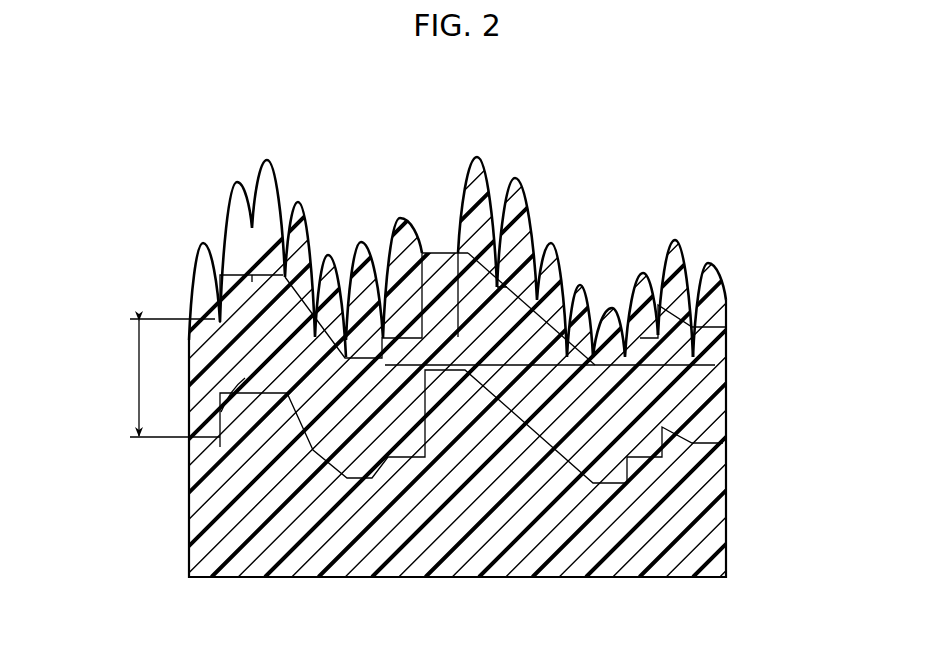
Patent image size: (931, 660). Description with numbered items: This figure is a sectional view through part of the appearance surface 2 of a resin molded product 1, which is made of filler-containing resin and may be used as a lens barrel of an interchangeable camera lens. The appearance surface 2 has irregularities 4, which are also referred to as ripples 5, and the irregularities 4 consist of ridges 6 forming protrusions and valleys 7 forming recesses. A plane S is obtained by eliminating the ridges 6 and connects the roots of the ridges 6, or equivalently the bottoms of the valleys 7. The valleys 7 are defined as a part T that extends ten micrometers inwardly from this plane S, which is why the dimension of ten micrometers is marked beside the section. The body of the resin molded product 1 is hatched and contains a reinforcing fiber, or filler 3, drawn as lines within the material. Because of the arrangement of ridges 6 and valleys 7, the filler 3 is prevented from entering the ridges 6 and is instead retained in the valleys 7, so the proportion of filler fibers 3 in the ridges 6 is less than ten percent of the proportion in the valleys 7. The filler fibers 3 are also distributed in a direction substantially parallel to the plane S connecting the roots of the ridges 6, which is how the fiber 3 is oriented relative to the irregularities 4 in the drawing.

The resin molded product 1 is at (690, 533).
The appearance surface 2 is at (303, 156).
The reinforcing fiber (filler) 3 is at (547, 370).
The irregularities 4 is at (744, 309).
The ripples 5 is at (676, 240).
The ridges 6 is at (478, 157).
The valleys 7 is at (345, 360).
The plane S is at (237, 272).
The part T is at (188, 443).